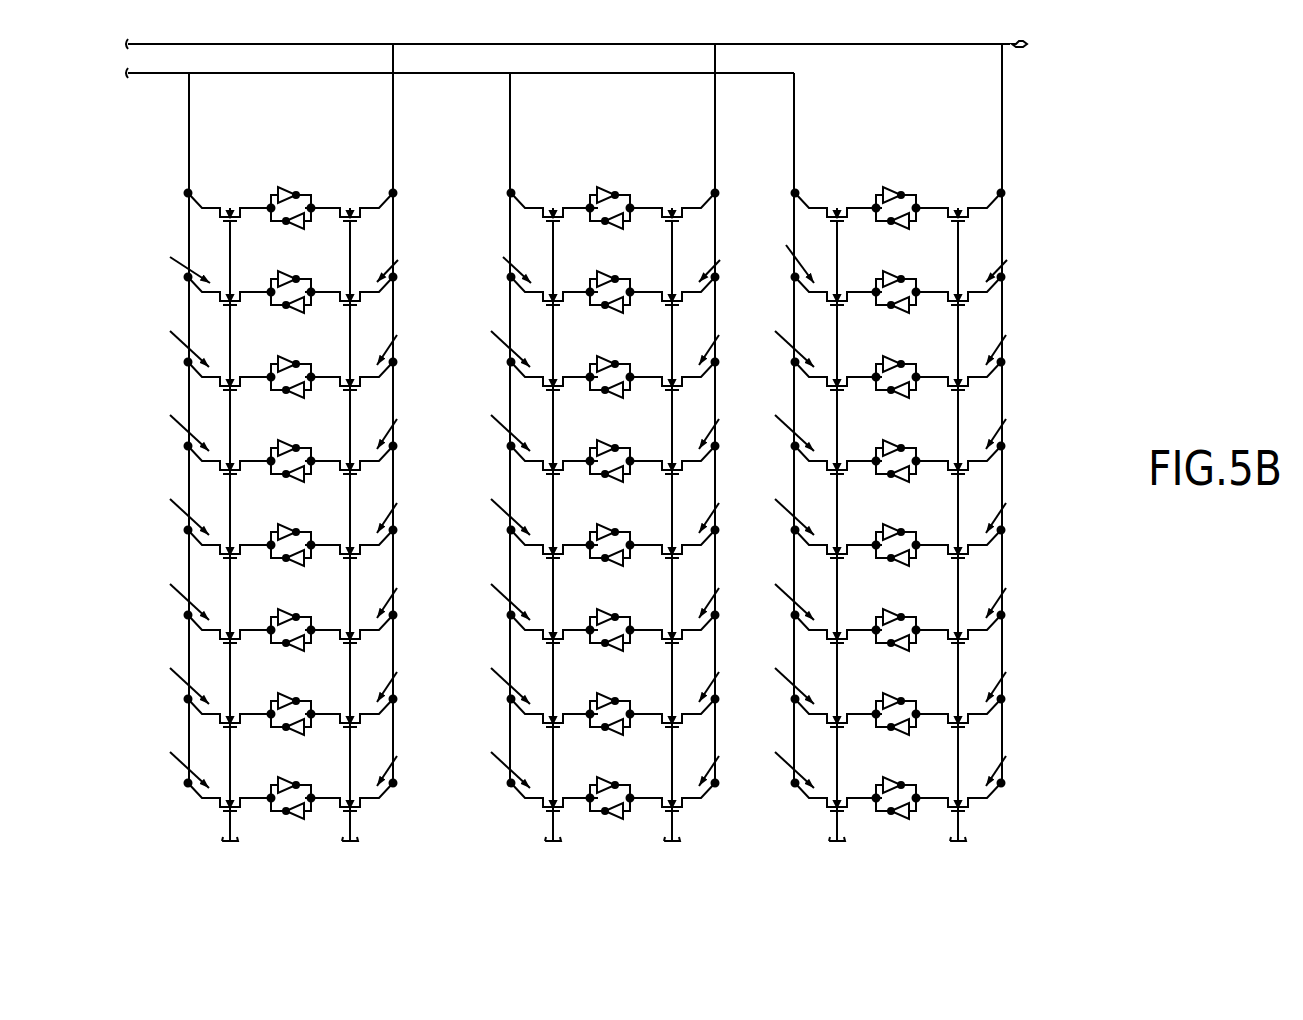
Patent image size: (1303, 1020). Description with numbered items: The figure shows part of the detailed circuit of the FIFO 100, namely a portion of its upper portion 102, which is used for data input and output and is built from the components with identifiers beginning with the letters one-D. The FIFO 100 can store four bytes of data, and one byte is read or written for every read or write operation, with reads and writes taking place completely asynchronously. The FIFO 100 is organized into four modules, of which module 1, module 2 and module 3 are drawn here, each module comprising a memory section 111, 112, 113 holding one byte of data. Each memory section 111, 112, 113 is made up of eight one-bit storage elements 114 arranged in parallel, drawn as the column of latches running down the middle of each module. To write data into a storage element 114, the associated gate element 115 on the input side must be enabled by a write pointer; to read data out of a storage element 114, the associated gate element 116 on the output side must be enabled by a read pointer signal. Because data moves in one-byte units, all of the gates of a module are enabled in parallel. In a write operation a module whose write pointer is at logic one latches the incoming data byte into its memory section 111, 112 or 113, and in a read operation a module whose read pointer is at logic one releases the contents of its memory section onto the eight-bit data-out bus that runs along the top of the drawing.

The FIFO 100 is at (1142, 403).
The upper portion 102 is at (1053, 312).
The module 1 is at (290, 42).
The module 2 is at (608, 42).
The module 3 is at (890, 42).
The memory section 111 is at (178, 248).
The memory section 112 is at (500, 236).
The memory section 113 is at (792, 256).
The one-bit storage element 114 is at (917, 158).
The gate element 115 is at (846, 172).
The gate element 116 is at (984, 173).